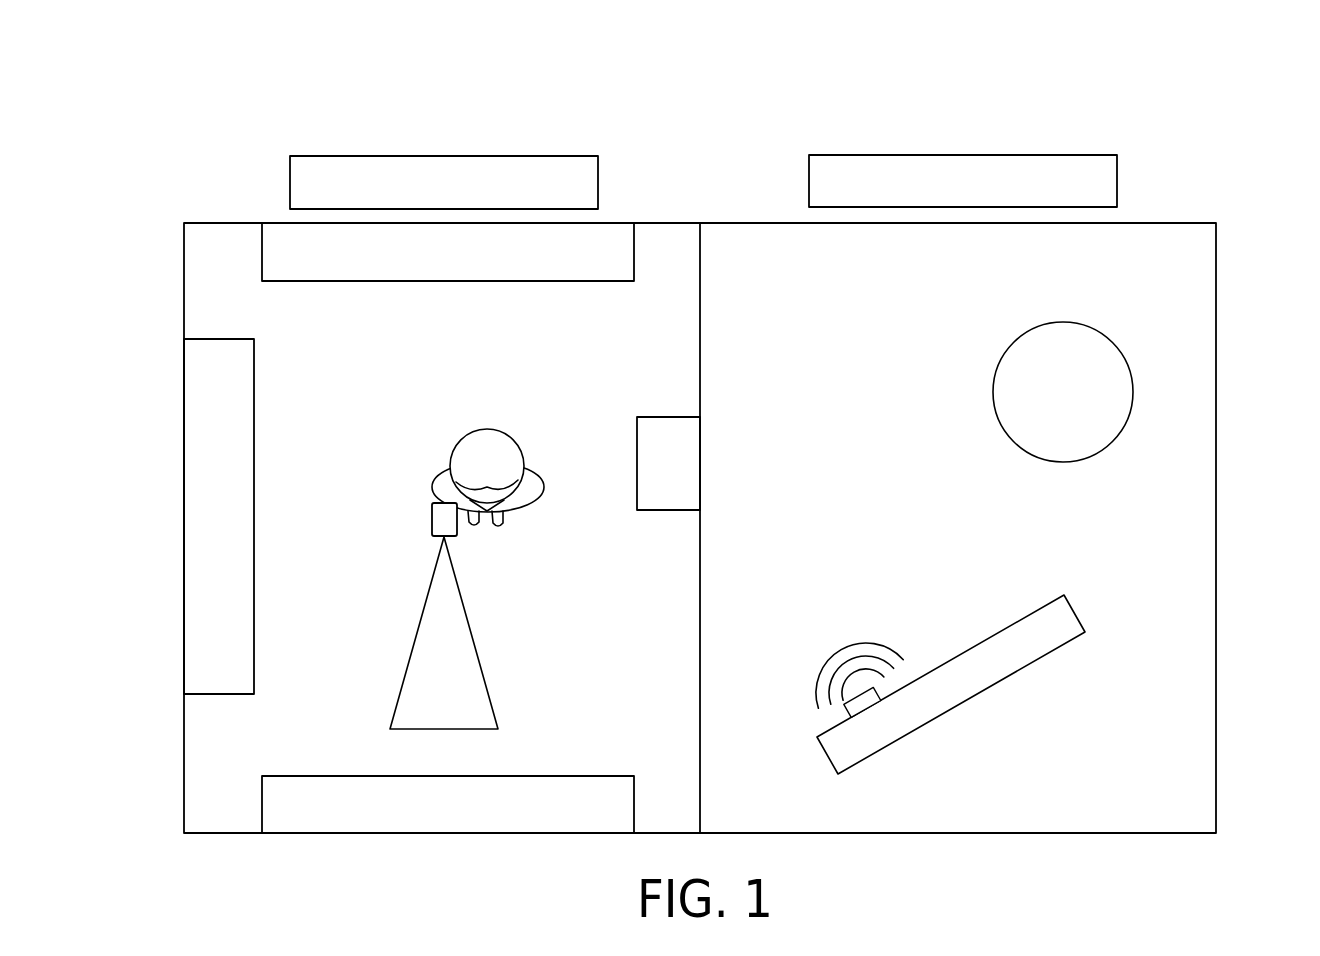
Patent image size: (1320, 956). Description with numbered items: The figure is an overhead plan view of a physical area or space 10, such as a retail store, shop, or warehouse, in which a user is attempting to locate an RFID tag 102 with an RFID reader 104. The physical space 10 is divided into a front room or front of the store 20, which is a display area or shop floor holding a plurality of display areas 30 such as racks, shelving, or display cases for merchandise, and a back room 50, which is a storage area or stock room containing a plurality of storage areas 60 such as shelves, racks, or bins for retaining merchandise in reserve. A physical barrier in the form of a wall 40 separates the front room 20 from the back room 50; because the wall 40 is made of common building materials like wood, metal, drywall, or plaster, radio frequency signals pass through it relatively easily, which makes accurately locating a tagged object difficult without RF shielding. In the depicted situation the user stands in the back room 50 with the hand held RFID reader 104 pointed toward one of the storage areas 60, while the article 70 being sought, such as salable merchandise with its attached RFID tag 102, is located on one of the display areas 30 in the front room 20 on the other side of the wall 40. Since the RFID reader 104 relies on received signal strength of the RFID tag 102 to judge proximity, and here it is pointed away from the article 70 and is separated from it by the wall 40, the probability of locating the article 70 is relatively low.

The physical area or space 10 is at (1082, 108).
The front room or front of the store 20 is at (1089, 197).
The display areas 30 is at (1090, 603).
The wall 40 is at (701, 305).
The back room 50 is at (568, 197).
The storage areas 60 is at (464, 260).
The article 70 is at (868, 700).
The RFID tag 102 is at (829, 652).
The RFID reader 104 is at (432, 525).